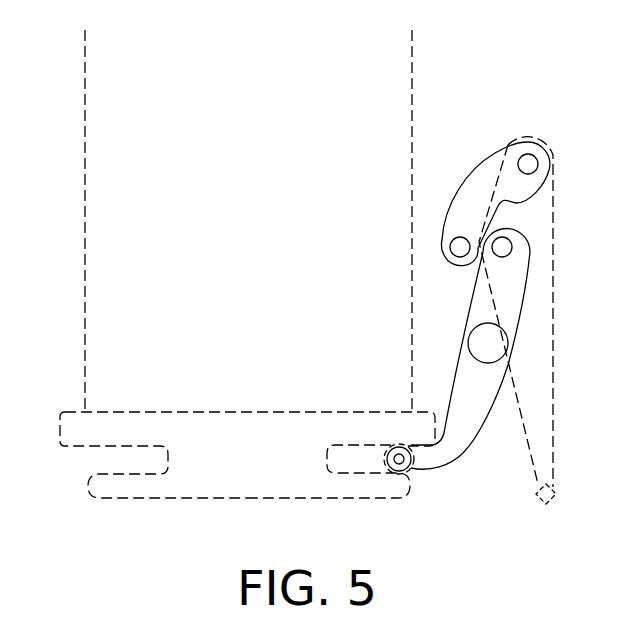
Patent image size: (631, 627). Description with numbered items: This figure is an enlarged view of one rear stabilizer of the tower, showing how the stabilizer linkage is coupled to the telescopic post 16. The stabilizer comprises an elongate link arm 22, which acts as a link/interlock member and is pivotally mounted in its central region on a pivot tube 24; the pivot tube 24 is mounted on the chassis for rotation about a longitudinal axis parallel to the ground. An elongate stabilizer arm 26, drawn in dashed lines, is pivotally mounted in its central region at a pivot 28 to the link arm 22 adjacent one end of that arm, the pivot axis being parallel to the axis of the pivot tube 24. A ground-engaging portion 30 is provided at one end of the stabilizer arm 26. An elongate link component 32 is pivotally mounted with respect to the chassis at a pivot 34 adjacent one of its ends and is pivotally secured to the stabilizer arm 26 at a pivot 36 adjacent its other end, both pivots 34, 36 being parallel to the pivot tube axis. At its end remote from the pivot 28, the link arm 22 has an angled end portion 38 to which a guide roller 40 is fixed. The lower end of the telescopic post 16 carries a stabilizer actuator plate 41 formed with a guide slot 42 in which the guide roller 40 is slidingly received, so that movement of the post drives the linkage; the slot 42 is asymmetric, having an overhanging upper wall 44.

The telescopic post 16 is at (90, 111).
The link arm 22 is at (460, 447).
The pivot tube 24 is at (468, 340).
The stabilizer arm 26 is at (558, 291).
The pivotal mounting of stabilizer arm 28 is at (531, 248).
The ground-engaging portion 30 is at (553, 502).
The link component 32 is at (486, 185).
The pivotal mounting of link component to chassis 34 is at (452, 262).
The pivotal mounting of link component to stabilizer arm 36 is at (548, 168).
The angled end portion 38 is at (438, 463).
The guide roller 40 is at (399, 452).
The stabilizer actuator plate 41 is at (195, 419).
The guide slot 42 is at (342, 475).
The overhanging upper wall 44 is at (60, 428).